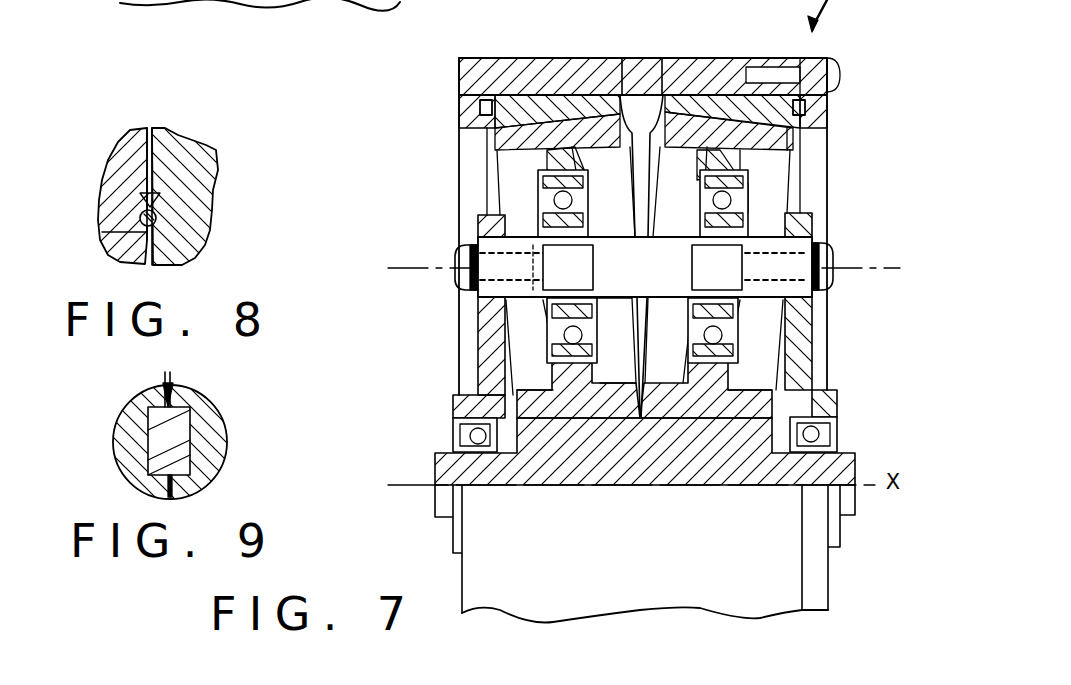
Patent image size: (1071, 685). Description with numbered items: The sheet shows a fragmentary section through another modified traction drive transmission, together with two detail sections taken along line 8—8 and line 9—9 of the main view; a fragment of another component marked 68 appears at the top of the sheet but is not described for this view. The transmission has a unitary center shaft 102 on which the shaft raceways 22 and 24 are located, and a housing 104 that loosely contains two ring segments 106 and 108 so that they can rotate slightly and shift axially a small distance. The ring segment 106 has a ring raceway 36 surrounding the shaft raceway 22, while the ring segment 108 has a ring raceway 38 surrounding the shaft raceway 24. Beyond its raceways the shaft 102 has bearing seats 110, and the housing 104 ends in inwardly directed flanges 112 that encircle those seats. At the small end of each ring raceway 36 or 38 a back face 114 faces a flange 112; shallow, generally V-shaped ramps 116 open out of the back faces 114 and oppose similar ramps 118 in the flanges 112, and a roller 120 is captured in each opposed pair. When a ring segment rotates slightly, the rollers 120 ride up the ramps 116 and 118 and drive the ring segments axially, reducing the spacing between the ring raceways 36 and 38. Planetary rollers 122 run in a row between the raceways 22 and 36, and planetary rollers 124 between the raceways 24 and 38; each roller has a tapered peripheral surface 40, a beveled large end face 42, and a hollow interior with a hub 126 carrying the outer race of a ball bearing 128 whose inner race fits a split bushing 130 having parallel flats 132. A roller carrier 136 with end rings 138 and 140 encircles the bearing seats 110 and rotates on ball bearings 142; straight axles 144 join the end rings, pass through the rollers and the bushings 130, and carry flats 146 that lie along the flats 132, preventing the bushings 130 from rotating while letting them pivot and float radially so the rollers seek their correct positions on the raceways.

In FIG. 7, the shaft raceway 22 is at (587, 400).
In FIG. 7, the shaft raceway 24 is at (698, 413).
In FIG. 7, the ring raceway 36 is at (553, 130).
In FIG. 7, the ring raceway 38 is at (700, 110).
In FIG. 7, the tapered peripheral surface 40 is at (540, 418).
In FIG. 7, the large end face 42 is at (640, 100).
In FIG. 7, the housing portion 68 is at (277, 0).
In FIG. 7, the center shaft 102 is at (447, 468).
In FIG. 7, the housing 104 is at (603, 77).
In FIG. 7, the ring segment 106 is at (513, 133).
In FIG. 8, the ring segment 106 is at (190, 193).
In FIG. 7, the ring segment 108 is at (733, 107).
In FIG. 7, the bearing seat 110 is at (433, 453).
In FIG. 7, the flange 112 is at (470, 112).
In FIG. 8, the flange 112 is at (113, 202).
In FIG. 7, the back face 114 is at (480, 97).
In FIG. 8, the back face 114 is at (147, 160).
In FIG. 8, the ramp 116 is at (102, 228).
In FIG. 8, the ramp 118 is at (150, 193).
In FIG. 7, the roller 120 is at (487, 100).
In FIG. 8, the roller 120 is at (160, 223).
In FIG. 7, the planetary roller 122 is at (527, 337).
In FIG. 7, the planetary roller 124 is at (770, 183).
In FIG. 7, the hub 126 is at (727, 372).
In FIG. 7, the ball bearing 128 is at (747, 200).
In FIG. 7, the split bushing 130 is at (543, 313).
In FIG. 9, the split bushing 130 is at (133, 412).
In FIG. 9, the flat 132 is at (167, 376).
In FIG. 7, the roller carrier 136 is at (480, 360).
In FIG. 7, the end ring 138 is at (490, 302).
In FIG. 7, the end ring 140 is at (802, 337).
In FIG. 7, the ball bearing 142 is at (455, 417).
In FIG. 7, the axle 144 is at (640, 413).
In FIG. 9, the axle 144 is at (152, 483).
In FIG. 7, the flat 146 is at (543, 247).
In FIG. 9, the flat 146 is at (148, 433).
In FIG. 7, the section line 8— 8 is at (459, 112).
In FIG. 7, the section line 9— 9 is at (690, 222).